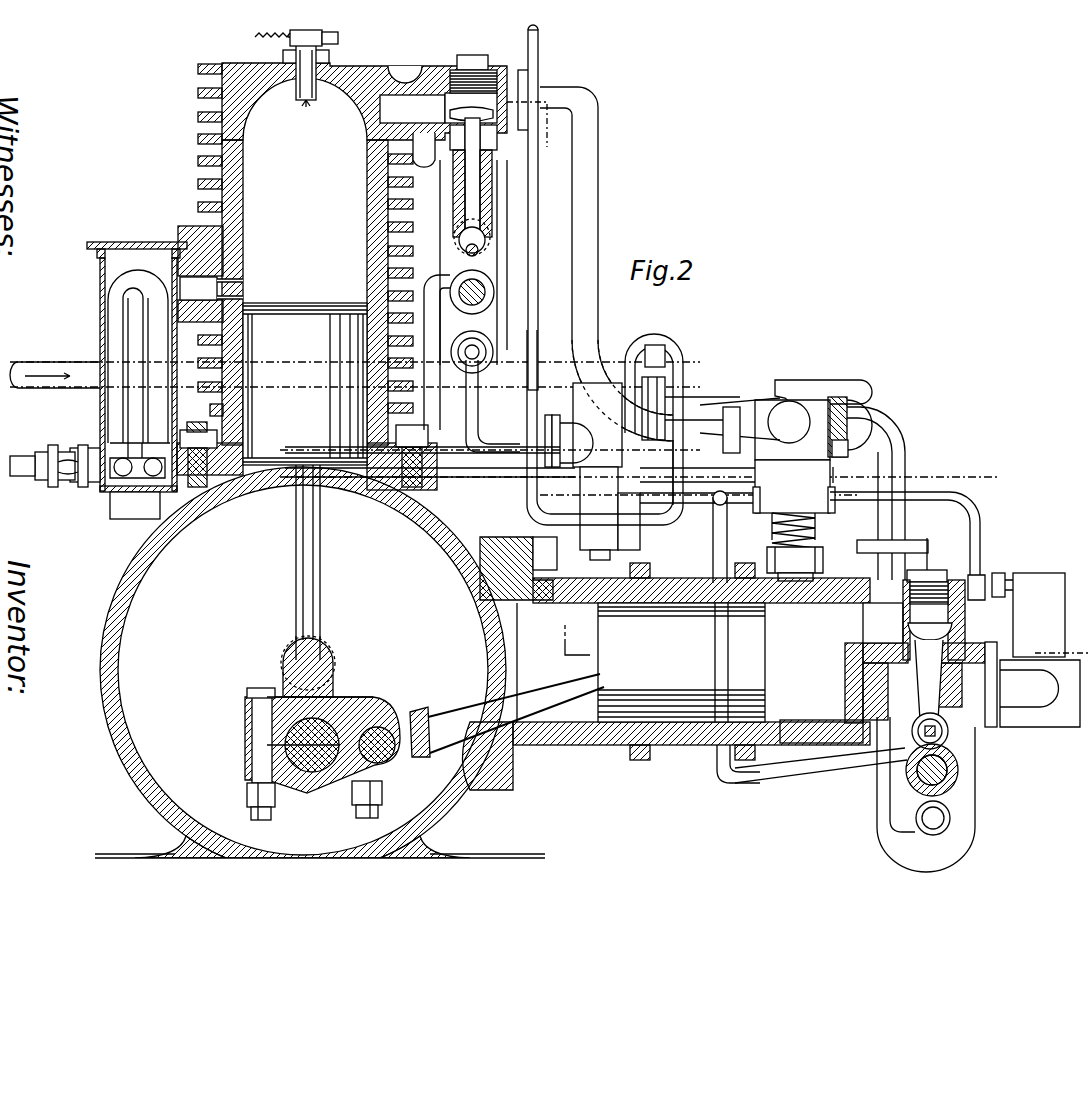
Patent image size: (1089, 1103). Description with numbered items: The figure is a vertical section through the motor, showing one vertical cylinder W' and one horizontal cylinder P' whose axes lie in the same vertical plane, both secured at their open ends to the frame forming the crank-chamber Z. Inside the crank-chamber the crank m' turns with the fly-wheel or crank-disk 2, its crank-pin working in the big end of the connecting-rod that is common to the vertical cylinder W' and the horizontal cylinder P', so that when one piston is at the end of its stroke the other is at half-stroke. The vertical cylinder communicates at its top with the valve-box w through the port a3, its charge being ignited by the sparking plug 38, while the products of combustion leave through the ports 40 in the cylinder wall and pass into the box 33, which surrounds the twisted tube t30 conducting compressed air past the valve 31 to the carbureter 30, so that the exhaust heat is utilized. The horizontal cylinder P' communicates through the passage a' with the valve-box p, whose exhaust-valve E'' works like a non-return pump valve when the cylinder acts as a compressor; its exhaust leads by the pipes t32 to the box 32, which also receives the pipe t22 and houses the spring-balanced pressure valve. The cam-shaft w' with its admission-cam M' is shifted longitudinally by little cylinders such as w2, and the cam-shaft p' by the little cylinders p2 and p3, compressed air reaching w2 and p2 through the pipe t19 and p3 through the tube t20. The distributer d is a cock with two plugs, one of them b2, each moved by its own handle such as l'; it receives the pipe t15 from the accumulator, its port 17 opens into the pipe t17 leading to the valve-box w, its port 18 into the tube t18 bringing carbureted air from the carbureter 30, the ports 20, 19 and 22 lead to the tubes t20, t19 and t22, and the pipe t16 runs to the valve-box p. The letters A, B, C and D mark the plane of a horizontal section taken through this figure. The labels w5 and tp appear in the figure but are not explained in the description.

The fly-wheel or crank-disk 2 is at (320, 670).
The section-line point A is at (188, 106).
The sparking or igniting plug 38 is at (307, 68).
The vertical cylinder W' is at (305, 442).
The port a3 is at (412, 131).
The valve-box w is at (467, 206).
The little cylinder w2 is at (485, 232).
The admission-cam M' is at (500, 261).
The cam-shaft w' is at (504, 292).
The valve lever pivot w5 is at (482, 340).
The box 33 is at (115, 258).
The spiral or twisted tube t30 is at (110, 283).
The pipe t15 is at (82, 372).
The valve 31 is at (58, 478).
The ports 40 is at (255, 297).
The section-line point B is at (533, 207).
The pipe t17 is at (592, 165).
The carbureter 30 is at (572, 398).
The pipe t19 is at (700, 505).
The handle l' is at (833, 386).
The tube t18 is at (757, 420).
The port 17 is at (725, 445).
The port 18 is at (842, 412).
The distributer d is at (847, 452).
The plug b2 is at (794, 486).
The port 20 is at (843, 480).
The port 22 is at (830, 505).
The port 19 is at (758, 520).
The pipe t16 is at (905, 470).
The pipe t22 is at (975, 525).
The valve stem cap tp is at (900, 568).
The box 32 is at (1039, 615).
The section-line point D is at (1062, 643).
The horizontal cylinder P' is at (667, 663).
The section-line point C is at (570, 649).
The passage a' is at (882, 673).
The valve-box p is at (942, 620).
The exhaust-valve E'' is at (939, 680).
The pipe t32 is at (1032, 684).
The tube t20 is at (880, 800).
The little cylinder p2 is at (948, 733).
The cam-shaft p' is at (949, 770).
The little cylinder p3 is at (950, 812).
The crank m' is at (406, 728).
The crank-chamber Z is at (440, 525).